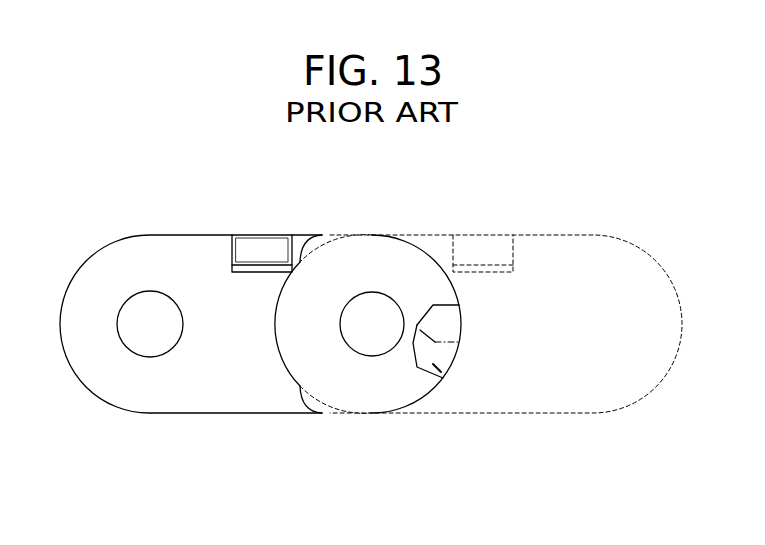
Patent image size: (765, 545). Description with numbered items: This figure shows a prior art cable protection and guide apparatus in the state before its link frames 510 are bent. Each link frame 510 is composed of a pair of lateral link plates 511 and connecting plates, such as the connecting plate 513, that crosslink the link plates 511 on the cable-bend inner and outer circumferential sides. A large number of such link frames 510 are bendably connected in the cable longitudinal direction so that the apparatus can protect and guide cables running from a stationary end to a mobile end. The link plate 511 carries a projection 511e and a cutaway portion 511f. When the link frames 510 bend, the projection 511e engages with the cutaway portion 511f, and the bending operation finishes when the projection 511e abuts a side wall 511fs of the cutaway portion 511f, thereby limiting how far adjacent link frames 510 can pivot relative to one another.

The link frame 510 is at (200, 219).
The link plate 511 is at (120, 257).
The connecting plate 513 is at (261, 247).
The projection 511e is at (452, 324).
The cutaway portion 511f is at (443, 352).
The side wall 511fs is at (445, 370).